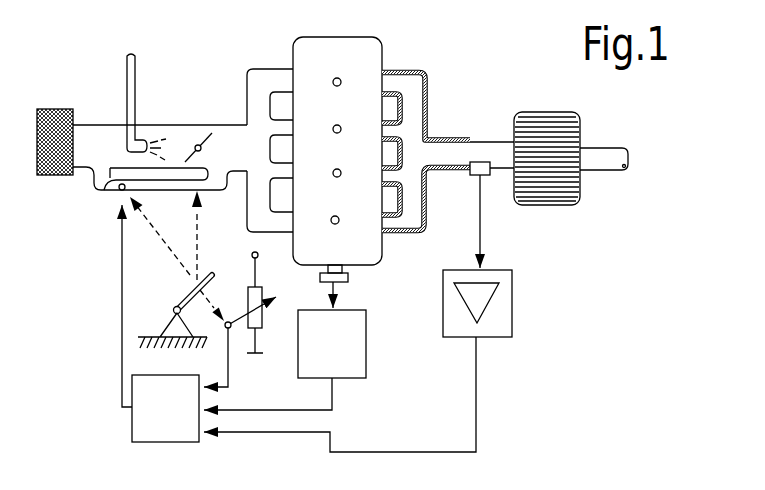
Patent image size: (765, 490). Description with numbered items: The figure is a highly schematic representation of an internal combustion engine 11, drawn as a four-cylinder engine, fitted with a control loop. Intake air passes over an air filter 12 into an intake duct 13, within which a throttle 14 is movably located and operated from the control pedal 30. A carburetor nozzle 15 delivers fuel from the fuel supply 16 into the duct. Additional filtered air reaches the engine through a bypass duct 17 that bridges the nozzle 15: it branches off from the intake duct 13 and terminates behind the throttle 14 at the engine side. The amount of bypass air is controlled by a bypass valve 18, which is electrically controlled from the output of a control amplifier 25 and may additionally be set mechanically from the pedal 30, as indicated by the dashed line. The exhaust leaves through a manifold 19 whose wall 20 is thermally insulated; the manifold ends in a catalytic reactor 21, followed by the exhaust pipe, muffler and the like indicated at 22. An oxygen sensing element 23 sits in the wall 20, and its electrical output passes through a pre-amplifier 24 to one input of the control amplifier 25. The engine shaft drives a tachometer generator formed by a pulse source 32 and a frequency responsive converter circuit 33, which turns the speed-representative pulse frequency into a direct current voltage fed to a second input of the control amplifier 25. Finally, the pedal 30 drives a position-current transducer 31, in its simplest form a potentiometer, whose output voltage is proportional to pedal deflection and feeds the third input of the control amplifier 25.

The internal combustion engine 11 is at (384, 50).
The air filter 12 is at (60, 109).
The intake duct 13 is at (186, 128).
The throttle 14 is at (208, 147).
The nozzle 15 is at (143, 142).
The fuel supply 16 is at (137, 72).
The bypass duct 17 is at (167, 194).
The bypass valve 18 is at (112, 186).
The manifold 19 is at (418, 142).
The wall 20 is at (428, 95).
The catalytic reactor 21 is at (546, 120).
The exhaust pipe, muffler, and the like 22 is at (601, 150).
The oxygen sensing element 23 is at (473, 176).
The pre-amplifier 24 is at (505, 316).
The control amplifier 25 is at (164, 438).
The control pedal 30 is at (179, 284).
The position-current transducer 31 is at (263, 312).
The pulse source 32 is at (349, 279).
The frequency responsive direct current output converter circuit 33 is at (378, 385).